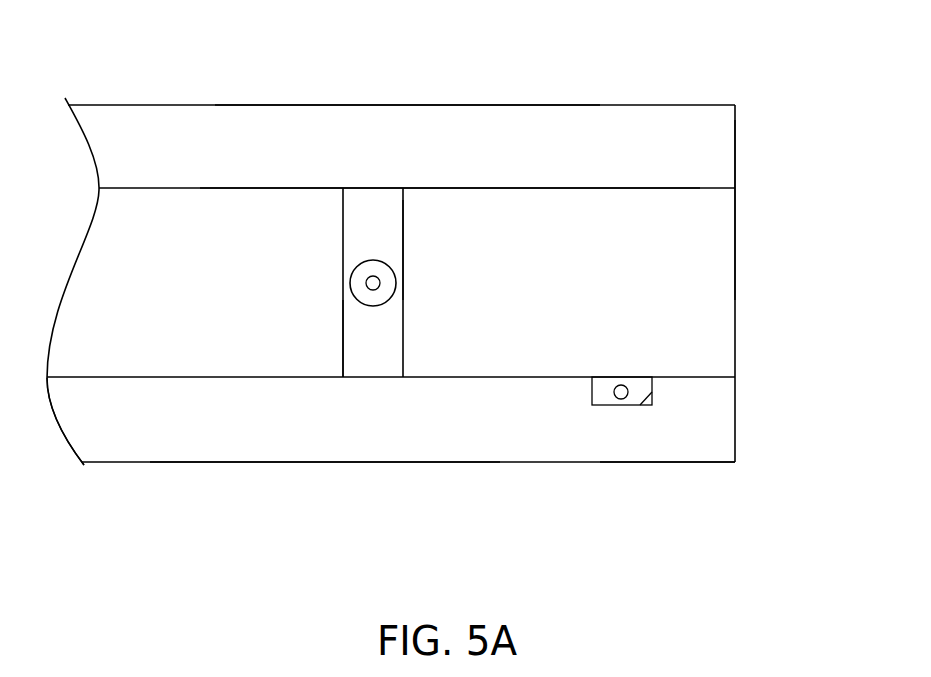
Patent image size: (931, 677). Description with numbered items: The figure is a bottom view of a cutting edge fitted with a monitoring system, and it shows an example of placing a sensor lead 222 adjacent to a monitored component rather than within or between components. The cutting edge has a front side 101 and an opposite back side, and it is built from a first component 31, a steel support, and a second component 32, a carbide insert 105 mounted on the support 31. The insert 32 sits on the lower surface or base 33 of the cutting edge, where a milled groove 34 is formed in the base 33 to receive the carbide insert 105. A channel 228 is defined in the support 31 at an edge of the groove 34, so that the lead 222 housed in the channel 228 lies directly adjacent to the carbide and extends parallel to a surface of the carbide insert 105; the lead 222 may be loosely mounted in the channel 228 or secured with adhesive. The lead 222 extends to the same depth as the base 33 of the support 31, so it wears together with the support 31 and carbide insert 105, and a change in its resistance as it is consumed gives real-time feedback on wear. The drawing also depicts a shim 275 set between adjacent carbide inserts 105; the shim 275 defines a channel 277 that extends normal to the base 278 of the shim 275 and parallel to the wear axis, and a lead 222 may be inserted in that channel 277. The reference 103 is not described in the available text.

The front side 101 is at (215, 105).
The second surface 103 is at (228, 462).
The carbide insert 105 is at (298, 203).
The first component 31 is at (152, 462).
The second component 32 is at (194, 313).
The base 33 is at (692, 440).
The milled groove 34 is at (645, 188).
The lead 222 is at (380, 283).
The channel 228 is at (638, 407).
The shim 275 is at (416, 213).
The channel 277 is at (358, 272).
The base 278 is at (360, 355).